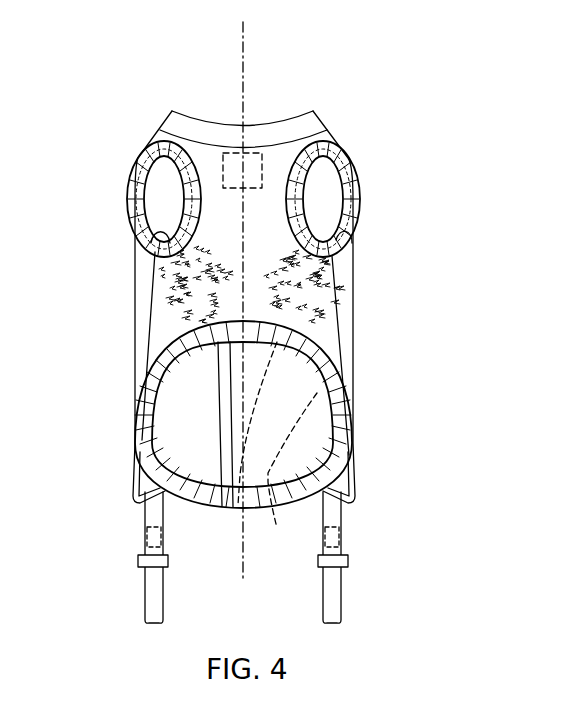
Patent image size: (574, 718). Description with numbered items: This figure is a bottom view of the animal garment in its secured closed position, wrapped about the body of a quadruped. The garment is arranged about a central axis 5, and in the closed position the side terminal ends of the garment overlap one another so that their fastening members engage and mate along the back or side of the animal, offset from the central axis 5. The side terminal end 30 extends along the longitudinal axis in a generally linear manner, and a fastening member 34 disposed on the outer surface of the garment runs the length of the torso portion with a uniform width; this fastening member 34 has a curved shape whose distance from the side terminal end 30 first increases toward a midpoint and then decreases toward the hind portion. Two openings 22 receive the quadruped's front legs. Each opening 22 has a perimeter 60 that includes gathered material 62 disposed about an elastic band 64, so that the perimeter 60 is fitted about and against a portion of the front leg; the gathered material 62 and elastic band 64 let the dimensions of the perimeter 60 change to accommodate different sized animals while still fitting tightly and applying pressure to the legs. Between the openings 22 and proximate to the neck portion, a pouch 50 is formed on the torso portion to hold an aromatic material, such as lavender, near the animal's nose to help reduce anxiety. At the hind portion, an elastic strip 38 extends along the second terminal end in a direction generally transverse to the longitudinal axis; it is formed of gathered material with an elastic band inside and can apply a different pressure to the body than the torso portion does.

The central axis 5 is at (246, 40).
The pouch 50 is at (262, 153).
The elastic band 64 is at (136, 160).
The gathered material 62 is at (127, 183).
The openings 22 is at (158, 199).
The perimeter 60 is at (150, 236).
The elastic strip 38 is at (350, 458).
The side terminal end 30 is at (220, 426).
The fastening member 34 is at (277, 446).